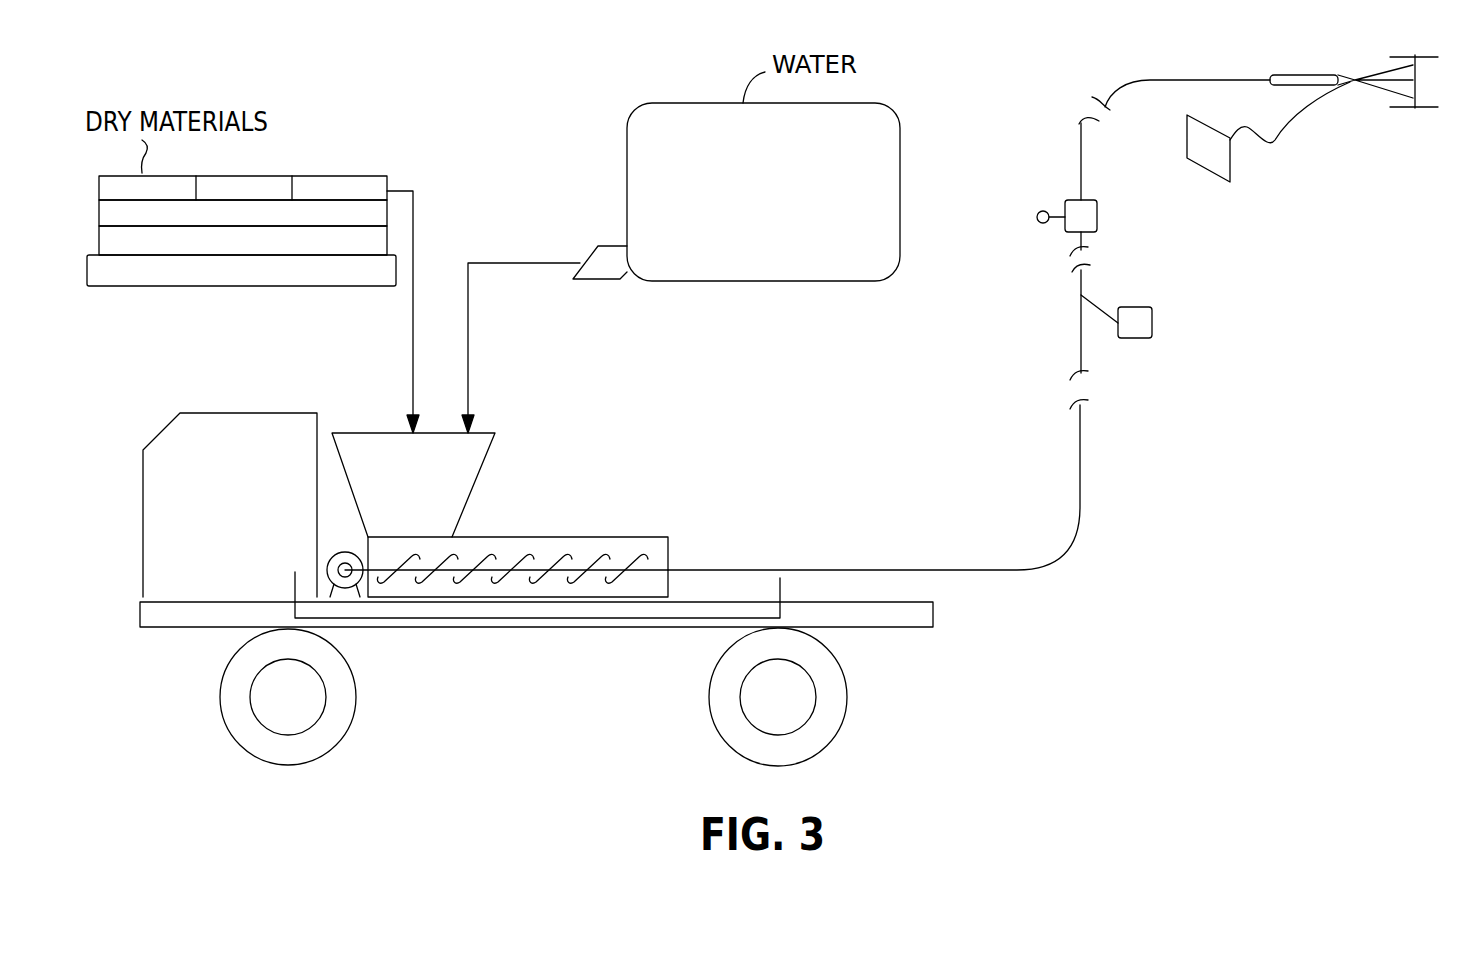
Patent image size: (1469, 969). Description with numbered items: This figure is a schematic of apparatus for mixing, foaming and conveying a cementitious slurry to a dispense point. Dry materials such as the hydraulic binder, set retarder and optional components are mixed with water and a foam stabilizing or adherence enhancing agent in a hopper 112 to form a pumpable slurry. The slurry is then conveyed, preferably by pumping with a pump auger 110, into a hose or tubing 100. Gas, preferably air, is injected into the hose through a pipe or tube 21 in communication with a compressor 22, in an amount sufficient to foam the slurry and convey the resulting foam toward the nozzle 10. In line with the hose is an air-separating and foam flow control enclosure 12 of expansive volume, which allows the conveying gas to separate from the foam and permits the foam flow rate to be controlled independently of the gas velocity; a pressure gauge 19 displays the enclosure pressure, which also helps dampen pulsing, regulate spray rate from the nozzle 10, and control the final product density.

The nozzle 10 is at (1295, 75).
The air-separating and foam flow control enclosure 12 is at (1085, 218).
The pressure gauge 19 is at (1040, 211).
The pipe or tube 21 is at (1095, 300).
The compressor 22 is at (1142, 323).
The hose or tubing 100 is at (1053, 555).
The pump auger 110 is at (447, 582).
The hopper 112 is at (480, 480).